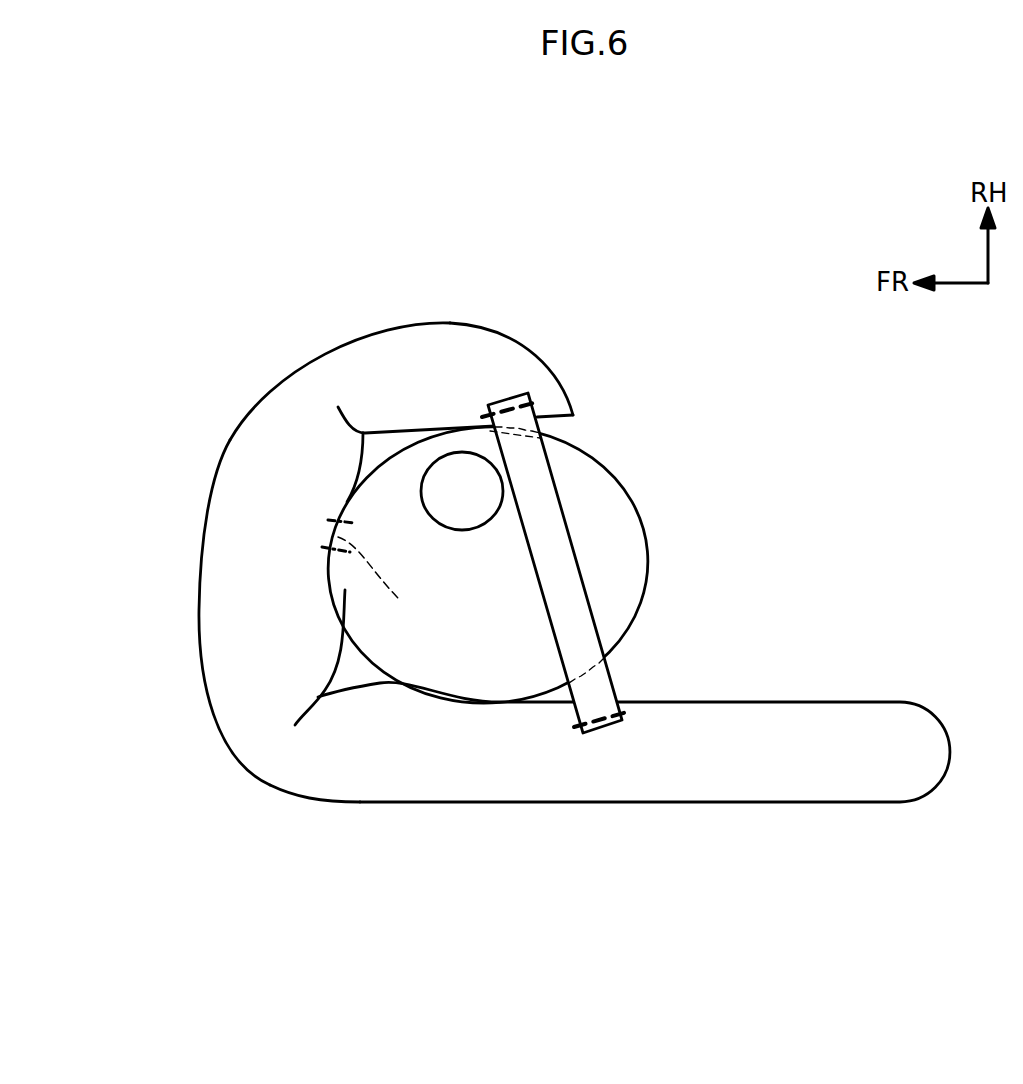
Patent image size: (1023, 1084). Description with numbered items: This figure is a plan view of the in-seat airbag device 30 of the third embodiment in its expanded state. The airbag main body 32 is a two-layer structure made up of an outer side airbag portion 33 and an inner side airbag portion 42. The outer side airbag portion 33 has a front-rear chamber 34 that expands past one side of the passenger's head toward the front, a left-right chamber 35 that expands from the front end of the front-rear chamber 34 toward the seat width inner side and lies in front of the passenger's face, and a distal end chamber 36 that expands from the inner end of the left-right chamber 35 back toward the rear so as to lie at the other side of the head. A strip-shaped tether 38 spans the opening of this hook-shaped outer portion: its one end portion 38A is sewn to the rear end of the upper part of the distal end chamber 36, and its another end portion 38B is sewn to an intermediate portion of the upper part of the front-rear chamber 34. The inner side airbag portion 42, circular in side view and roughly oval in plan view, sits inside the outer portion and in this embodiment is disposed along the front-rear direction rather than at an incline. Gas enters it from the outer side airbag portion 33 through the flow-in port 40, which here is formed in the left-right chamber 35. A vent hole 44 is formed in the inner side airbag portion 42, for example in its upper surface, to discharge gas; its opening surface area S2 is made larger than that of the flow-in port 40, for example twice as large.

The airbag device 30 is at (306, 808).
The airbag main body 32 is at (192, 676).
The outer side airbag portion 33 is at (245, 405).
The front-rear chamber 34 is at (497, 803).
The left-right chamber 35 is at (223, 607).
The distal end chamber 36 is at (430, 338).
The tether 38 is at (571, 540).
The one end portion 38A is at (497, 405).
The another end portion 38B is at (617, 730).
The flow-in port 40 is at (443, 611).
The inner side airbag portion 42 is at (620, 482).
The vent hole 44 is at (486, 516).
The opening surface area S2 is at (420, 468).